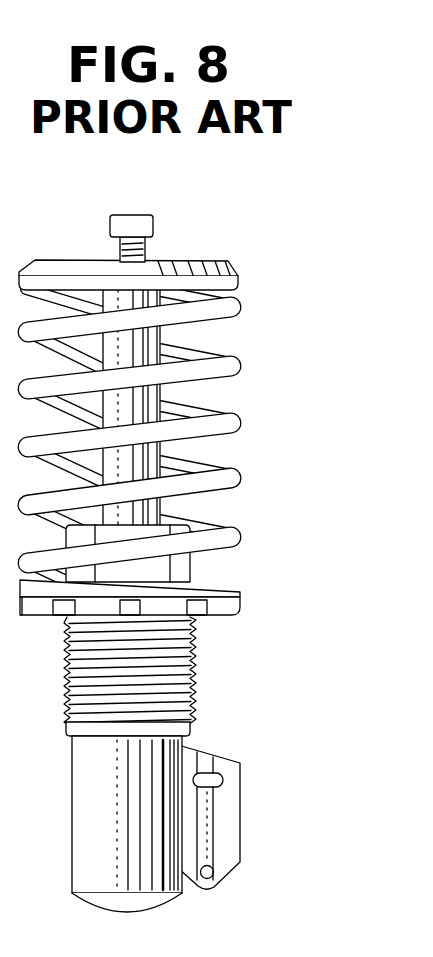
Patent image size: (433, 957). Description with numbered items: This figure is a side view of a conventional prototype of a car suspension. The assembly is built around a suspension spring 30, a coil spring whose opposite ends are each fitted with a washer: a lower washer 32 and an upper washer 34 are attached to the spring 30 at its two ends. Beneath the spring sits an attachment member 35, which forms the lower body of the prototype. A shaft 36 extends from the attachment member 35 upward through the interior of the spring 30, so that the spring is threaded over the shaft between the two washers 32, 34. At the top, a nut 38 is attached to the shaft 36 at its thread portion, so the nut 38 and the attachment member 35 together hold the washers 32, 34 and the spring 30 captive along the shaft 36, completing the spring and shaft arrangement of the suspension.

The suspension spring 30 is at (246, 414).
The washer 32 is at (228, 604).
The washer 34 is at (233, 272).
The shaft 36 is at (147, 252).
The nut 38 is at (116, 225).
The attachment member 35 is at (90, 802).